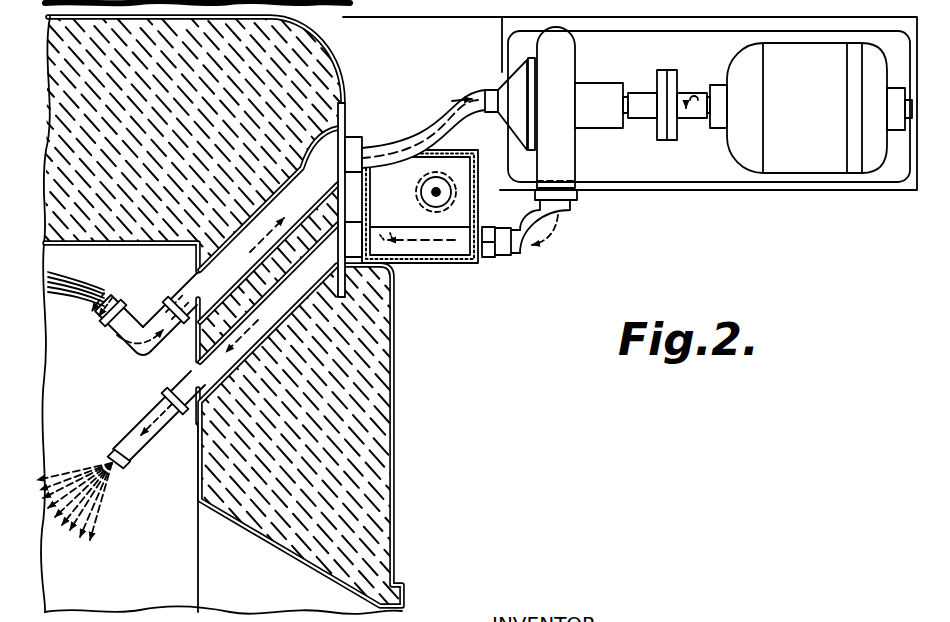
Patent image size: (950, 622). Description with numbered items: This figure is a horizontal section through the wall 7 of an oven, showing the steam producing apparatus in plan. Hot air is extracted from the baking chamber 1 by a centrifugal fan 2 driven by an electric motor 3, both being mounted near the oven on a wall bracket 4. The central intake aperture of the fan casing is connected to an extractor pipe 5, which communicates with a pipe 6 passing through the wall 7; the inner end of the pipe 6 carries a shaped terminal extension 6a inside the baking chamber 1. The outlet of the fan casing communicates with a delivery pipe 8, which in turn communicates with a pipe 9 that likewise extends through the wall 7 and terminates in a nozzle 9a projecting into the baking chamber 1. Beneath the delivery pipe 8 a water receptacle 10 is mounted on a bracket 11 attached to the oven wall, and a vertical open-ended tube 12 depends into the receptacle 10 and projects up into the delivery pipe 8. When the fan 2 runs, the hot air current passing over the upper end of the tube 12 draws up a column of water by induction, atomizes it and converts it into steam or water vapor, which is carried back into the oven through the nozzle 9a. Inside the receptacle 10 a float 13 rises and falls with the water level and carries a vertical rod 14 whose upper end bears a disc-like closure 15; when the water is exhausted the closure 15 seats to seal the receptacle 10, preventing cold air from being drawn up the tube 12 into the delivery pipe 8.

The baking chamber 1 is at (78, 258).
The fan 2 is at (562, 158).
The electric motor 3 is at (805, 53).
The wall bracket 4 is at (900, 186).
The extractor pipe 5 is at (455, 100).
The pipe 6 is at (338, 126).
The terminal extension 6a is at (118, 322).
The wall 7 is at (366, 464).
The delivery pipe 8 is at (455, 264).
The pipe 9 is at (257, 342).
The nozzle 9a is at (132, 462).
The water receptacle 10 is at (466, 262).
The bracket 11 is at (352, 200).
The vertical open-ended tube 12 is at (400, 264).
The float 13 is at (448, 170).
The vertical rod 14 is at (517, 232).
The disc-like closure 15 is at (440, 194).